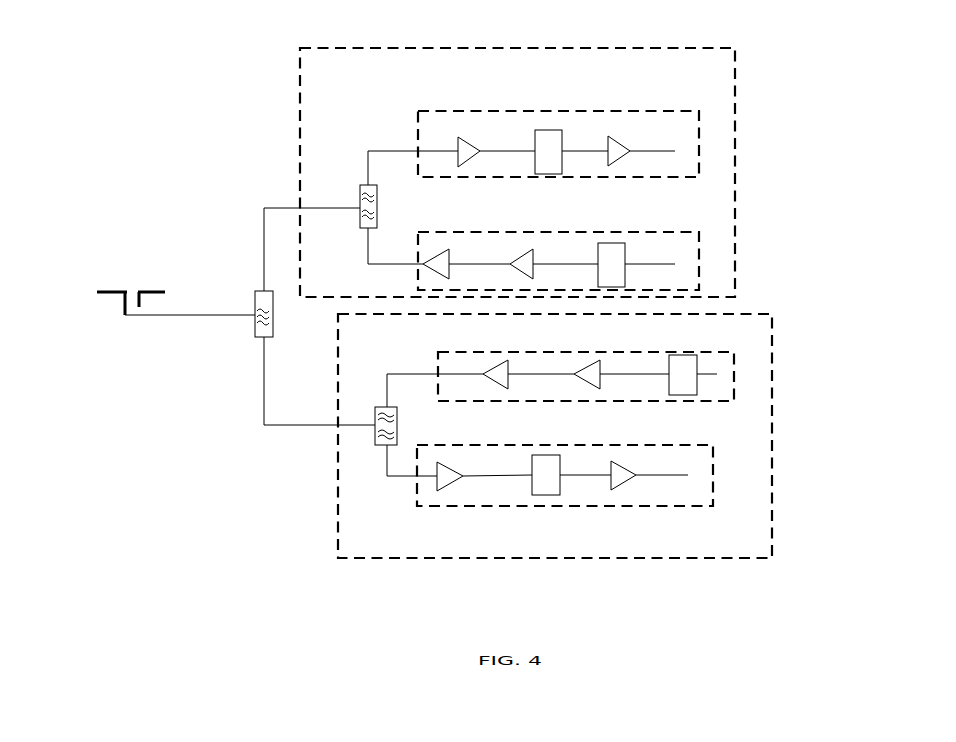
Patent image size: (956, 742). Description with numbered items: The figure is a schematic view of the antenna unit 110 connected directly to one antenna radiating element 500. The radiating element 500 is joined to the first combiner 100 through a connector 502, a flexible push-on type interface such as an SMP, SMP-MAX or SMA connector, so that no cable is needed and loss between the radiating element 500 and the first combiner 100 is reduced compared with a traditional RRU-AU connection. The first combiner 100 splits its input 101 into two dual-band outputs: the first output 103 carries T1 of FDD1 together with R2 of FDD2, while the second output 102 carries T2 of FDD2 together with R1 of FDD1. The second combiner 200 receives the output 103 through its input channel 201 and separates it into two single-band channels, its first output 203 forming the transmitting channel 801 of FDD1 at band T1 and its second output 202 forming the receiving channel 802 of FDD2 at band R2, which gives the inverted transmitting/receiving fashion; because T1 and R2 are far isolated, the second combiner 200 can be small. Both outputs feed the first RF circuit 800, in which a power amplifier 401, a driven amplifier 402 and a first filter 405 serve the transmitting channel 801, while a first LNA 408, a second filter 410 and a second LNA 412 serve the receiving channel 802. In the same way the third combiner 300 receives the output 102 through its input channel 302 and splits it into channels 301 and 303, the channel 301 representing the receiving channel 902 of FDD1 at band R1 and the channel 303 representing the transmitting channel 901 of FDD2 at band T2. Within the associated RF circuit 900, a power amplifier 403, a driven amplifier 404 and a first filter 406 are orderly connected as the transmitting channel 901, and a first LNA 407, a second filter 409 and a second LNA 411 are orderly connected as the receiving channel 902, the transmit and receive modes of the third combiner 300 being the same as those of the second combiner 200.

The antenna unit 110 is at (211, 51).
The radiating element 500 is at (124, 286).
The connector 502 is at (188, 313).
The first combiner 100 is at (258, 306).
The input of first combiner 101 is at (222, 307).
The second output of first combiner 102 is at (263, 378).
The first output of first combiner 103 is at (263, 240).
The second combiner 200 is at (362, 195).
The input channel of second combiner 201 is at (312, 199).
The second output of second combiner 202 is at (367, 175).
The first output of second combiner 203 is at (367, 255).
The third combiner 300 is at (393, 431).
The first output channel of third combiner 301 is at (385, 456).
The input channel of third combiner 302 is at (319, 414).
The second output channel of third combiner 303 is at (386, 398).
The power amplifier 401 is at (445, 258).
The driven amplifier 402 is at (533, 257).
The power amplifier 403 is at (497, 375).
The driven amplifier 404 is at (596, 368).
The first filter 405 is at (612, 250).
The first filter 406 is at (683, 373).
The first LNA 407 is at (441, 486).
The first LNA 408 is at (468, 145).
The second filter 409 is at (540, 483).
The second filter 410 is at (550, 128).
The second LNA 411 is at (622, 480).
The second LNA 412 is at (623, 143).
The first RF circuit 800 is at (735, 151).
The transmitting channel of FDD1 801 is at (699, 252).
The receiving channel of FDD2 802 is at (700, 117).
The second RF circuit 900 is at (775, 426).
The transmitting channel of FDD2 901 is at (715, 491).
The receiving channel of FDD1 902 is at (736, 371).